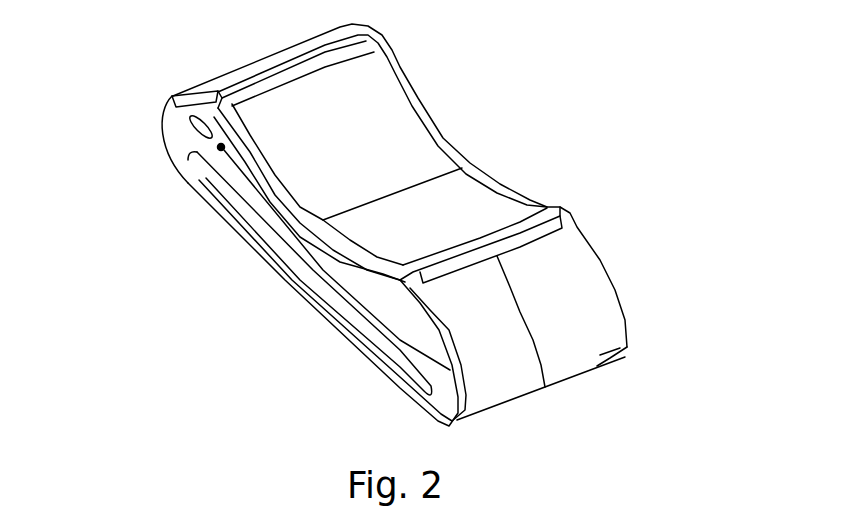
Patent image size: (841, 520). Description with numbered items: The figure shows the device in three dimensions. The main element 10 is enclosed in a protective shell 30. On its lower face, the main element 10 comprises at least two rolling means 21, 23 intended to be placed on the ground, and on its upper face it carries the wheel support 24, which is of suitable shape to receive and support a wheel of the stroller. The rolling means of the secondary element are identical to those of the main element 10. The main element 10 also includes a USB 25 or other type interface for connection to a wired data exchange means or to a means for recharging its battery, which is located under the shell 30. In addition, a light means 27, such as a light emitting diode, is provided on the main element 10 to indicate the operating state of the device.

The main element 10 is at (175, 96).
The rolling means 21 is at (478, 408).
The rolling means 23 is at (614, 362).
The wheel support 24 is at (434, 124).
The USB interface 25 is at (190, 117).
The light means 27 is at (219, 149).
The protective shell 30 is at (583, 270).